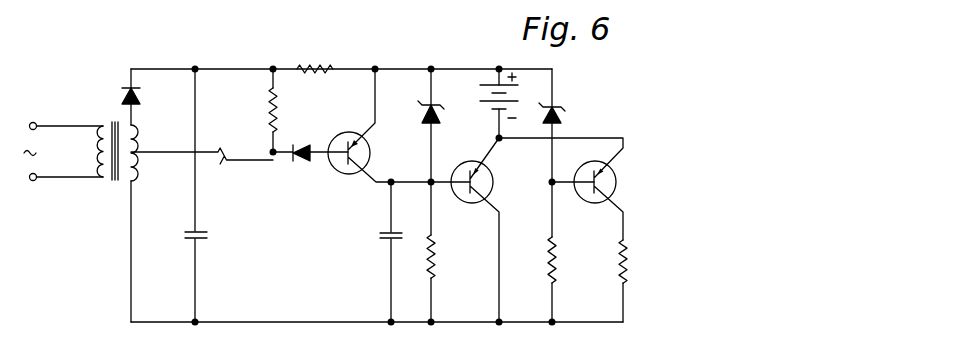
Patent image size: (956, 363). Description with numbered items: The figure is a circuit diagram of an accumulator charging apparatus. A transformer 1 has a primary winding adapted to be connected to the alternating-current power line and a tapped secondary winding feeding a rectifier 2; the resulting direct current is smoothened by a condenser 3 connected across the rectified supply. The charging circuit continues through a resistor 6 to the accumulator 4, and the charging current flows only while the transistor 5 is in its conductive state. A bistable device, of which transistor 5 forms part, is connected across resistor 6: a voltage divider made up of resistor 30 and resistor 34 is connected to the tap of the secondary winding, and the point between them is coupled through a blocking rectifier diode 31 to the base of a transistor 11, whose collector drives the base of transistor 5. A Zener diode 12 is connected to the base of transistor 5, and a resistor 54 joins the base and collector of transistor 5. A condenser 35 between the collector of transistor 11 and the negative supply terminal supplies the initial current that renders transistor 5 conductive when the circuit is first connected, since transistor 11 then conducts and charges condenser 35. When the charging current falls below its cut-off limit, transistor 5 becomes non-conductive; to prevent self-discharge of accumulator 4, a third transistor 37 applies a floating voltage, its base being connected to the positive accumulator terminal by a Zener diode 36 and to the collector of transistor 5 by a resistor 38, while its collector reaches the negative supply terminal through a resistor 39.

The transformer 1 is at (72, 182).
The rectifier 2 is at (118, 93).
The condenser 3 is at (210, 237).
The accumulator 4 is at (491, 113).
The transistor 5 is at (497, 183).
The resistor 6 is at (318, 63).
The transistor 11 is at (342, 183).
The Zener diode 12 is at (437, 108).
The resistor 30 is at (233, 157).
The blocking rectifier diode 31 is at (300, 163).
The resistor 34 is at (282, 112).
The condenser 35 is at (379, 237).
The Zener diode 36 is at (560, 104).
The third transistor 37 is at (620, 180).
The resistor 38 is at (563, 256).
The resistor 39 is at (627, 258).
The resistor 54 is at (438, 254).